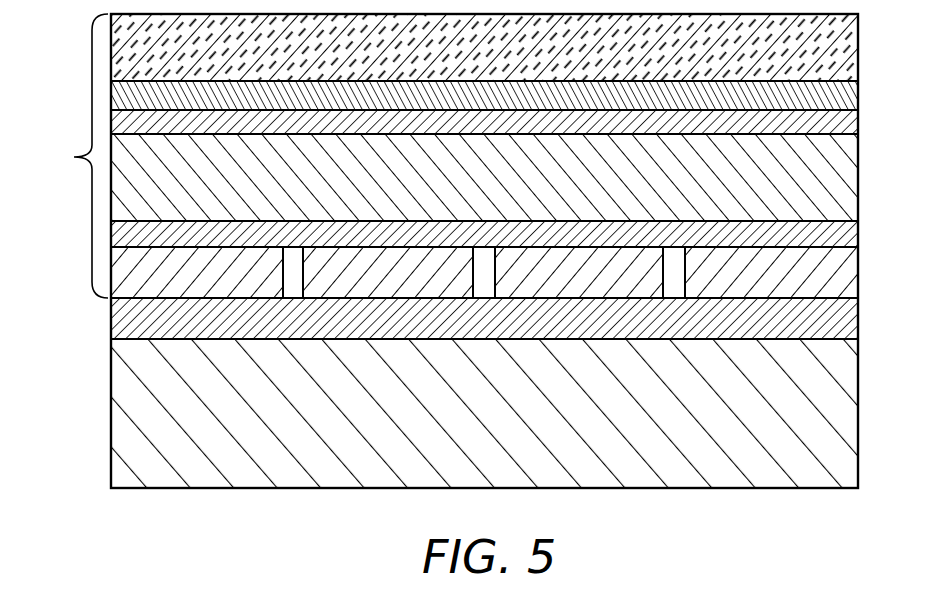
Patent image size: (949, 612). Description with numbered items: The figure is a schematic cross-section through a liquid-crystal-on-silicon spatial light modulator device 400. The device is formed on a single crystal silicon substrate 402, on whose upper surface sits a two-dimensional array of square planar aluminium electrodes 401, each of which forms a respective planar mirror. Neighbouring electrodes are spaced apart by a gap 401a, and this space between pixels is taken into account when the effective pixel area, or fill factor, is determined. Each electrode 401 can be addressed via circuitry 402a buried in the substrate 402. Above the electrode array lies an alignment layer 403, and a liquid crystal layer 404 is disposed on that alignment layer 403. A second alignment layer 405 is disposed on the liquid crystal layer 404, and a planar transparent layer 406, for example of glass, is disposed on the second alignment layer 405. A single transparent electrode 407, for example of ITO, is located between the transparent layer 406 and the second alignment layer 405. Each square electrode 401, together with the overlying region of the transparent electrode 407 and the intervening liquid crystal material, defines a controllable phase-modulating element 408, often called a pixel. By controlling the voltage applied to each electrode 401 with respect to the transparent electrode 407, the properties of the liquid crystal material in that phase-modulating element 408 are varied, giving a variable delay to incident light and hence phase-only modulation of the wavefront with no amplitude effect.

The optoelectronic component / layer stack 400 is at (810, 522).
The square planar aluminium electrodes 401 is at (858, 278).
The gap 401a is at (293, 287).
The single crystal silicon substrate 402 is at (858, 417).
The circuitry 402a is at (858, 326).
The alignment layer 403 is at (858, 240).
The liquid crystal layer 404 is at (858, 183).
The second alignment layer 405 is at (858, 128).
The planar transparent layer 406 is at (858, 53).
The transparent electrode 407 is at (858, 102).
The controllable phase-modulating element 408 is at (70, 156).